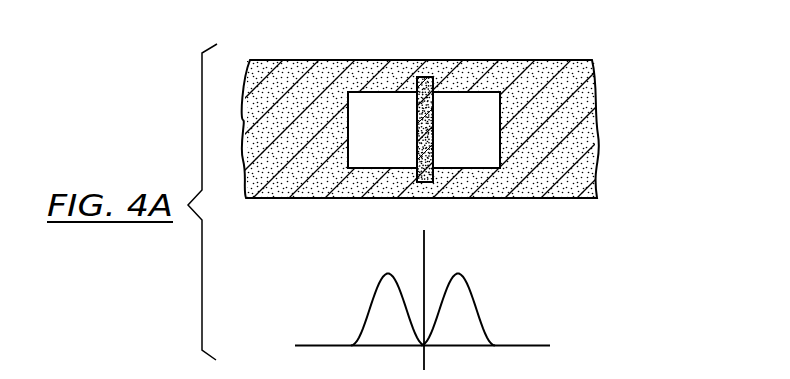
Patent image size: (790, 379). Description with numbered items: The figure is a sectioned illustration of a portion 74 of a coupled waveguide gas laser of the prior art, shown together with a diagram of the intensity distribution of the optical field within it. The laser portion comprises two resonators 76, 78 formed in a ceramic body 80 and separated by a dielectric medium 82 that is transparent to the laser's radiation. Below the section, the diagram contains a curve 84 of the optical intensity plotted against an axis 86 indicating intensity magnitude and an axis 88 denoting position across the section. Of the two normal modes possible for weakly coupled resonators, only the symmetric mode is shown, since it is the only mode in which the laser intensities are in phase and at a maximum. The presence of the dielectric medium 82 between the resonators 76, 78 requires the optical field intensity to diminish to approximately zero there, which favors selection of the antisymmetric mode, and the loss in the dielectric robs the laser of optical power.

The portion of a coupled waveguide gas laser 74 is at (429, 122).
The resonator 76 is at (394, 140).
The resonator 78 is at (477, 140).
The ceramic body 80 is at (593, 143).
The dielectric medium 82 is at (426, 78).
The curve of the optical intensity 84 is at (472, 296).
The axis indicating intensity magnitude 86 is at (425, 247).
The axis denoting position 88 is at (537, 345).